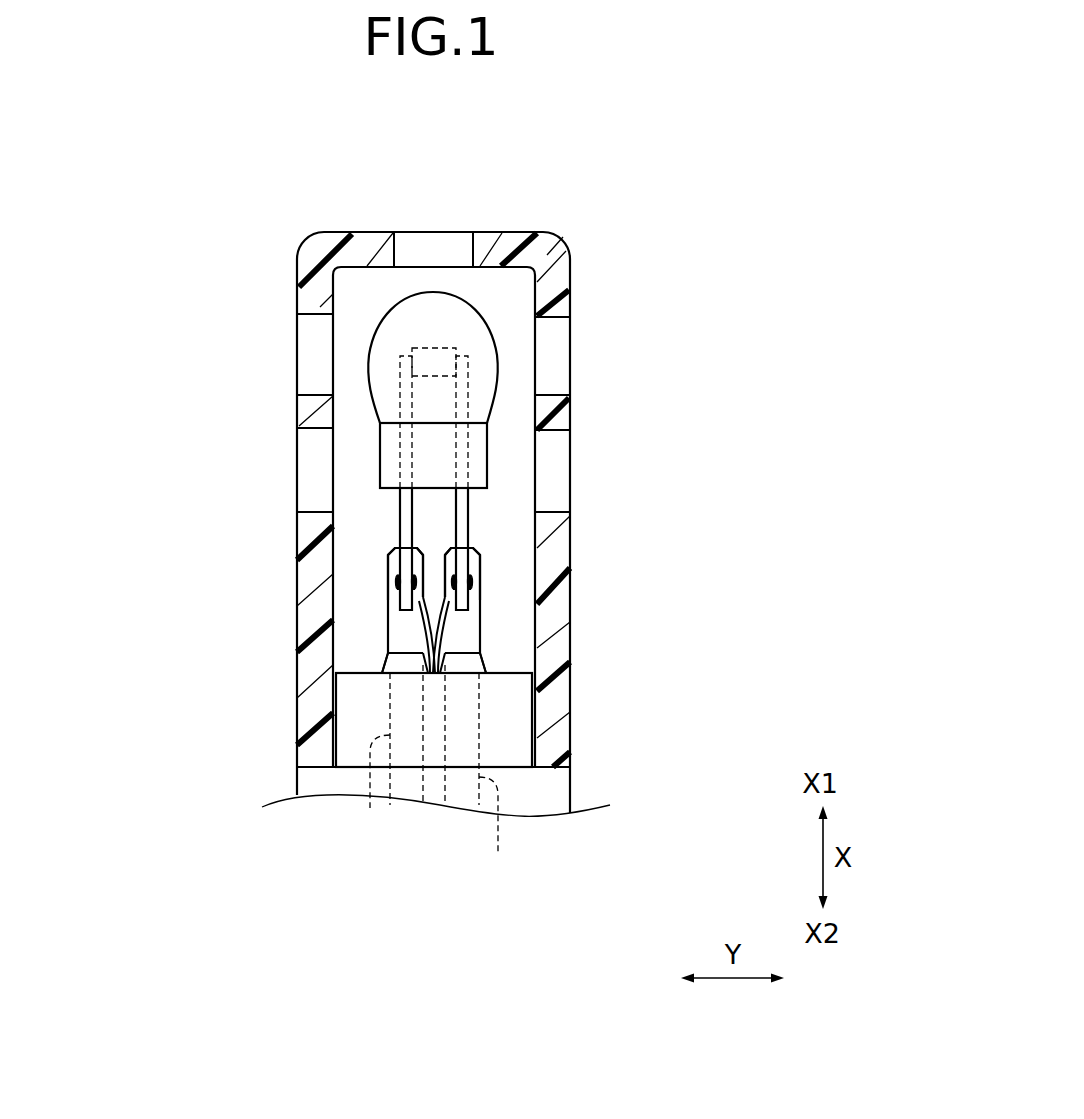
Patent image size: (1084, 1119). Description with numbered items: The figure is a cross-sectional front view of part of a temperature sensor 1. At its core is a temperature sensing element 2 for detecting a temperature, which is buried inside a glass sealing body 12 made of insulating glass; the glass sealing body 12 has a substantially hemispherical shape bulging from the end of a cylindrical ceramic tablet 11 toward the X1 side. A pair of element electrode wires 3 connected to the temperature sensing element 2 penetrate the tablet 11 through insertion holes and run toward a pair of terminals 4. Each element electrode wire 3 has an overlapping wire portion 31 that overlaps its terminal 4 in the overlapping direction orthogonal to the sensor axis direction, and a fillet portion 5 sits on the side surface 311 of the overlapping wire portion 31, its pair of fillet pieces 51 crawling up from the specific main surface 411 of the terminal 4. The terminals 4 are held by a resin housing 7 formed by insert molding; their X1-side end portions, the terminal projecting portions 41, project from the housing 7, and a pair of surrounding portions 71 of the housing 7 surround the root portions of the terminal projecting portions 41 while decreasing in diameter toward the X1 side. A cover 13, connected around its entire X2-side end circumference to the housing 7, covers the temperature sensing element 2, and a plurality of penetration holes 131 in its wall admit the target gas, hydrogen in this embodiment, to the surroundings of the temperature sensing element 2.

The temperature sensor 1 is at (605, 171).
The temperature sensing element 2 is at (436, 348).
The element electrode wires 3 is at (405, 523).
The overlapping wire portion 31 is at (400, 560).
The side surface 311 is at (385, 625).
The terminals 4 is at (370, 808).
The terminal projecting portions 41 is at (408, 638).
The specific main surface 411 is at (388, 663).
The fillet portion 5 is at (398, 583).
The fillet pieces 51 is at (398, 605).
The housing 7 is at (518, 752).
The surrounding portions 71 is at (402, 662).
The tablet 11 is at (478, 452).
The glass sealing body 12 is at (498, 328).
The cover 13 is at (547, 253).
The penetration holes 131 is at (412, 250).